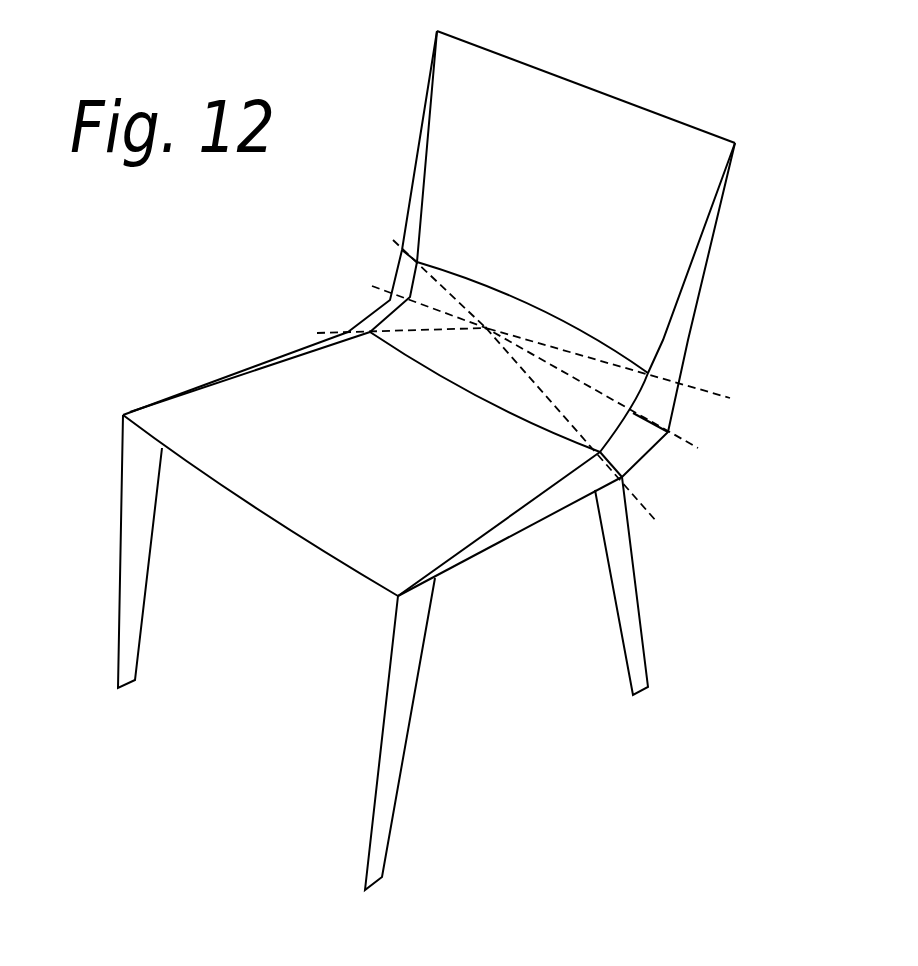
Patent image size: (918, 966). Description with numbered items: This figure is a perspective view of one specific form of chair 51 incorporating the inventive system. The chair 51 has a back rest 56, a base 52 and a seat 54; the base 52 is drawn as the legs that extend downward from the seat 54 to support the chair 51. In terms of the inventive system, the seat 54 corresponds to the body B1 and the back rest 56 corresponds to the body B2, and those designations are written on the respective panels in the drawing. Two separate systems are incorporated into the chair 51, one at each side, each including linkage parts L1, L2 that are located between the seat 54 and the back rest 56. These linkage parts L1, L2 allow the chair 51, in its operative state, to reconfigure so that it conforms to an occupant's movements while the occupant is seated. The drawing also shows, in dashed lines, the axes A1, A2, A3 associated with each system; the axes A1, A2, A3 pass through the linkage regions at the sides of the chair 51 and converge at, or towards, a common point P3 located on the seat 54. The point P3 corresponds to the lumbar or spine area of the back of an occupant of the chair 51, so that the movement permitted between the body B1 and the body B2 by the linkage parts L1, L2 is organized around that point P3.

The chair 51 is at (443, 460).
The base 52 is at (379, 701).
The seat 54 is at (453, 519).
The back rest 56 is at (601, 205).
The first linkage part L1 is at (378, 315).
The second linkage part L2 is at (412, 267).
The first axis A1 is at (483, 433).
The second axis A2 is at (541, 370).
The third axis A3 is at (564, 316).
The point P3 is at (486, 328).
The first body B1 is at (334, 473).
The second body B2 is at (542, 228).